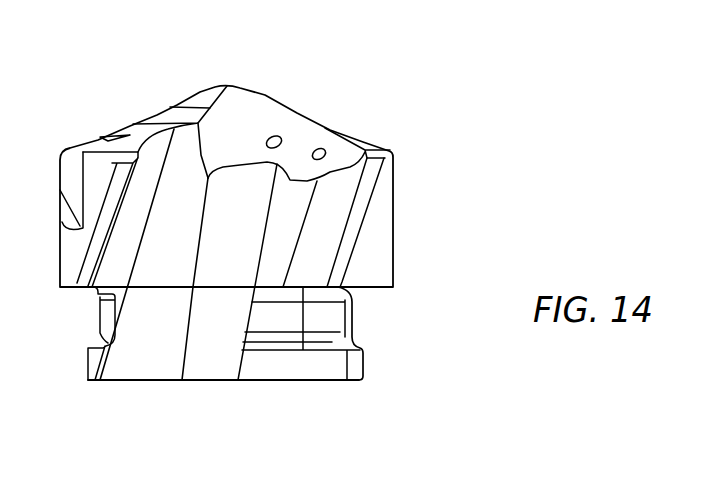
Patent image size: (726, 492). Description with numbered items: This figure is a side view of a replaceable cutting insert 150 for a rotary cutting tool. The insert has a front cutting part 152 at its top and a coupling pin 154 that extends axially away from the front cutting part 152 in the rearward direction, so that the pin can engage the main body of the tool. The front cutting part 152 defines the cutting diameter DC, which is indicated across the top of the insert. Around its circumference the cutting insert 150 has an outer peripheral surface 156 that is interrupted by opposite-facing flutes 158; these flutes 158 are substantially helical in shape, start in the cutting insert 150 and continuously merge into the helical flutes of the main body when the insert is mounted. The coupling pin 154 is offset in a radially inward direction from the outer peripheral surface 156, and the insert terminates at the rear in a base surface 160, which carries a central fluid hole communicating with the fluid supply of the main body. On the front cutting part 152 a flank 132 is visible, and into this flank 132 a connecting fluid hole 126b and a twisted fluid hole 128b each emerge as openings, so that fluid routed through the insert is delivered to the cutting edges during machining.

The replaceable cutting insert 150 is at (428, 173).
The front cutting part 152 is at (292, 98).
The flank 132 is at (247, 128).
The connecting fluid hole 126b is at (283, 140).
The twisted fluid hole 128b is at (323, 156).
The outer peripheral surface 156 is at (394, 243).
The flutes 158 is at (158, 323).
The coupling pin 154 is at (380, 368).
The base surface 160 is at (265, 380).
The cutting diameter DC is at (393, 145).